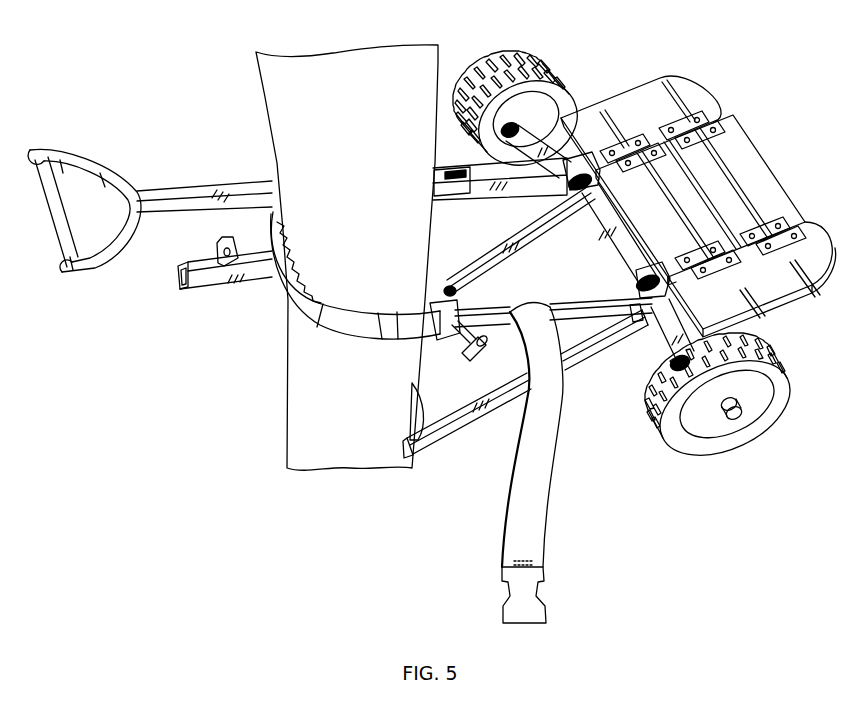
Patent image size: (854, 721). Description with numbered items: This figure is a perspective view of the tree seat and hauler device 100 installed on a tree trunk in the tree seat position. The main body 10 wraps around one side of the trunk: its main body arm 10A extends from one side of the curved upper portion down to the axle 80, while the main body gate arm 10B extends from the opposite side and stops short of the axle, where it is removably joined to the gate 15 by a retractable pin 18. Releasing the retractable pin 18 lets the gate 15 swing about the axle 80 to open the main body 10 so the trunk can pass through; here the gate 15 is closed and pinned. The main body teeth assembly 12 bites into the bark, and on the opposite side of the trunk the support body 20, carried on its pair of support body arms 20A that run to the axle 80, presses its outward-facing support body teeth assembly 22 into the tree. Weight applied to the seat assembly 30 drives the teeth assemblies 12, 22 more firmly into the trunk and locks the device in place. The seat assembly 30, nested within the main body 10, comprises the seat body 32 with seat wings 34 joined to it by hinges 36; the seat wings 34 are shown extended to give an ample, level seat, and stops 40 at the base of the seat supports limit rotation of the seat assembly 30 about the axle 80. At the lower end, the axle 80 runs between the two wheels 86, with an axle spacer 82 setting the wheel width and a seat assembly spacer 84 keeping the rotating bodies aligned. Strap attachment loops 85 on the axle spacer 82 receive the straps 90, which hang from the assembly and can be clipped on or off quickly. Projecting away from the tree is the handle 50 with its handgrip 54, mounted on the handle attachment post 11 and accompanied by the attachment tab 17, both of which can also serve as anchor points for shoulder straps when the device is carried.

The tree seat and hauler device 100 is at (238, 395).
The main body 10 is at (344, 303).
The main body arm 10A is at (432, 190).
The main body gate arm 10B is at (425, 305).
The handle attachment post 11 is at (210, 293).
The main body teeth assembly 12 is at (284, 297).
The gate 15 is at (488, 320).
The attachment tab 17 is at (220, 249).
The retractable pin 18 is at (465, 360).
The support body 20 is at (458, 422).
The support body arms 20A is at (503, 243).
The support body teeth assembly 22 is at (417, 400).
The seat assembly 30 is at (707, 193).
The seat body 32 is at (760, 173).
The seat wings 34 is at (697, 88).
The hinges 36 is at (767, 127).
The stops 40 is at (637, 318).
The handle 50 is at (198, 185).
The handgrip 54 is at (65, 230).
The axle 80 is at (727, 423).
The axle spacer 82 is at (660, 330).
The seat assembly spacer 84 is at (593, 227).
The strap attachment loops 85 is at (500, 126).
The wheels 86 is at (531, 53).
The straps 90 is at (520, 540).